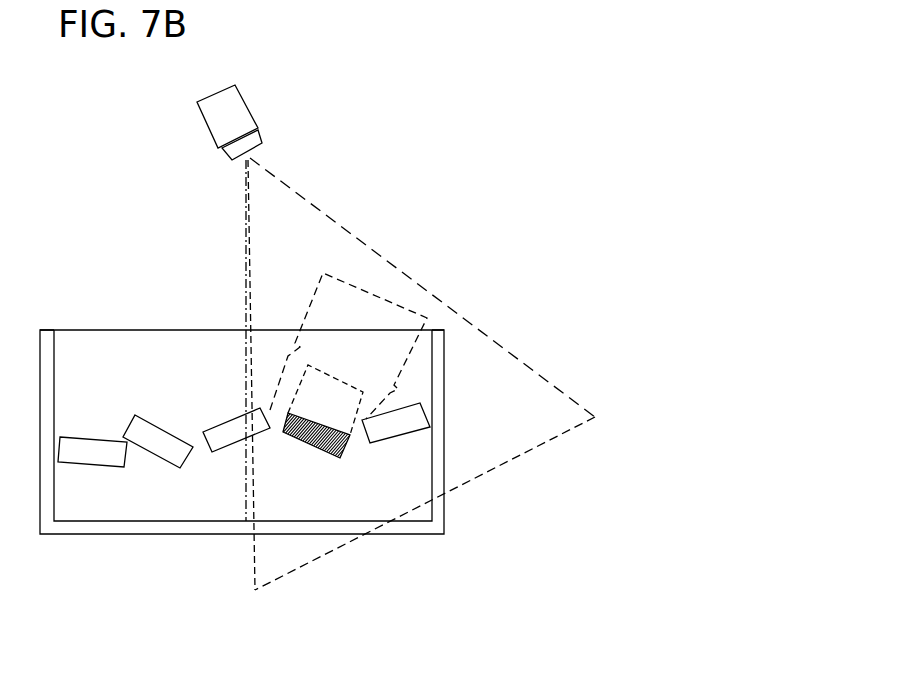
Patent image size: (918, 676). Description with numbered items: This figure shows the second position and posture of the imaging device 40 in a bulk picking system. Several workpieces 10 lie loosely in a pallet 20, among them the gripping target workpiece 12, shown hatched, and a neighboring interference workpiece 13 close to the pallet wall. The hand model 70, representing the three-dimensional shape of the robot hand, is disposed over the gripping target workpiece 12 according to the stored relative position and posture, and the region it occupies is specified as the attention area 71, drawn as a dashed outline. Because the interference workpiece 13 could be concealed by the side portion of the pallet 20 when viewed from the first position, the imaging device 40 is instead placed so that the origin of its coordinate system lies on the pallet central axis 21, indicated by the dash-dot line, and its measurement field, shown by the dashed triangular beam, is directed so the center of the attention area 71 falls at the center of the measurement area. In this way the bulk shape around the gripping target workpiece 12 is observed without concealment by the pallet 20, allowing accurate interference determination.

The workpiece 10 is at (92, 437).
The gripping target workpiece 12 is at (317, 455).
The interference workpiece 13 is at (397, 440).
The pallet 20 is at (440, 328).
The pallet central axis 21 is at (247, 500).
The imaging device 40 is at (203, 124).
The hand model 70 is at (366, 325).
The attention area 71 is at (407, 312).